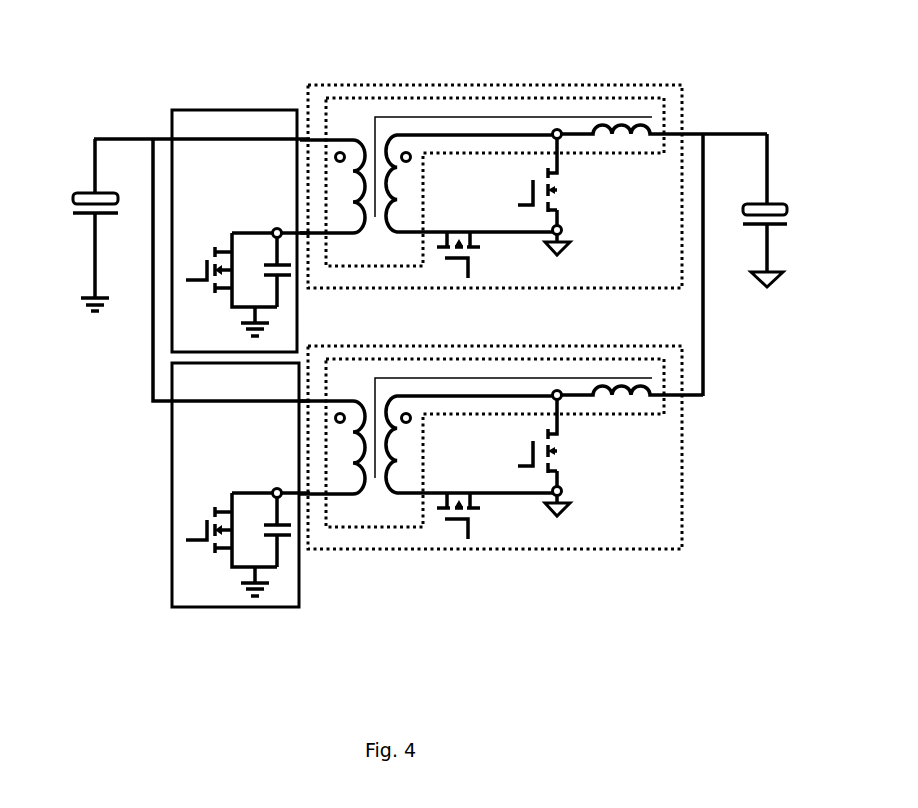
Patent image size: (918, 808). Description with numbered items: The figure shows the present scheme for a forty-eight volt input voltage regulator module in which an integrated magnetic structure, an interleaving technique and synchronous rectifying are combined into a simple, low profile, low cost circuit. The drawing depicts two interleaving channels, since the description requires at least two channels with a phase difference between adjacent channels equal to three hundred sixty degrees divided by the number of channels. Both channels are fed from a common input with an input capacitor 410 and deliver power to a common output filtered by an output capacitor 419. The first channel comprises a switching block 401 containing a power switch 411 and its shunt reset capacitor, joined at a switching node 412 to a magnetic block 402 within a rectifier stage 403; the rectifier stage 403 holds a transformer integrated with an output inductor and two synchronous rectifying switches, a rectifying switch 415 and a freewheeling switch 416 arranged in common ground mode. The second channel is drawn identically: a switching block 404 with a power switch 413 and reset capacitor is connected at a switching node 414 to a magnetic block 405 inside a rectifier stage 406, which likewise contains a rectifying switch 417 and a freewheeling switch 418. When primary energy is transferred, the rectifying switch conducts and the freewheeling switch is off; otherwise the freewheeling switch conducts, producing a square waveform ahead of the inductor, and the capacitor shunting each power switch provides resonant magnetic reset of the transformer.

The first switching circuit block 401 is at (242, 87).
The first transformer block 402 is at (462, 93).
The first converter stage 403 is at (487, 80).
The second switching circuit block 404 is at (168, 482).
The second transformer block 405 is at (482, 414).
The second converter stage 406 is at (495, 425).
The input capacitor 410 is at (73, 225).
The first switching transistor 411 is at (236, 280).
The first switching node 412 is at (271, 221).
The second switching transistor 413 is at (234, 539).
The second switching node 414 is at (271, 481).
The first rectifier transistor 415 is at (458, 239).
The second rectifier transistor 416 is at (562, 182).
The third rectifier transistor 417 is at (458, 501).
The fourth rectifier transistor 418 is at (562, 443).
The output capacitor 419 is at (752, 210).